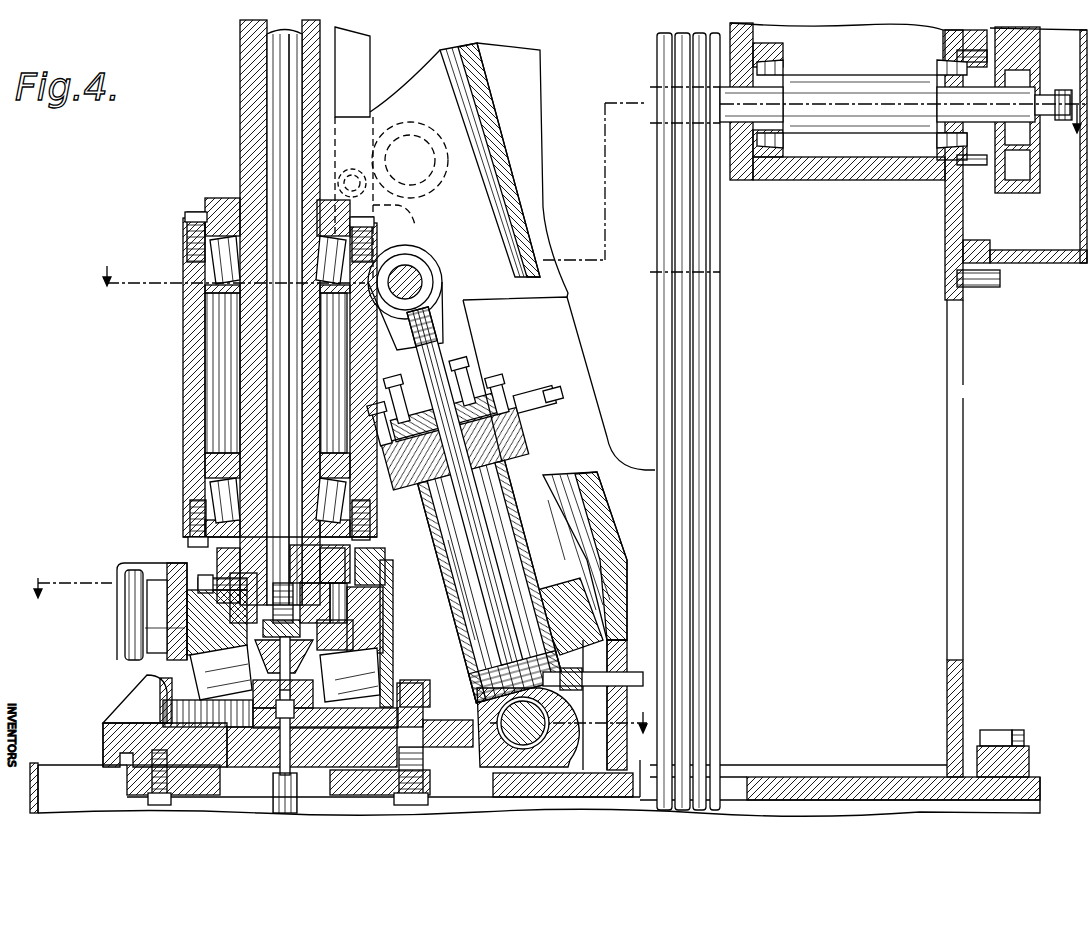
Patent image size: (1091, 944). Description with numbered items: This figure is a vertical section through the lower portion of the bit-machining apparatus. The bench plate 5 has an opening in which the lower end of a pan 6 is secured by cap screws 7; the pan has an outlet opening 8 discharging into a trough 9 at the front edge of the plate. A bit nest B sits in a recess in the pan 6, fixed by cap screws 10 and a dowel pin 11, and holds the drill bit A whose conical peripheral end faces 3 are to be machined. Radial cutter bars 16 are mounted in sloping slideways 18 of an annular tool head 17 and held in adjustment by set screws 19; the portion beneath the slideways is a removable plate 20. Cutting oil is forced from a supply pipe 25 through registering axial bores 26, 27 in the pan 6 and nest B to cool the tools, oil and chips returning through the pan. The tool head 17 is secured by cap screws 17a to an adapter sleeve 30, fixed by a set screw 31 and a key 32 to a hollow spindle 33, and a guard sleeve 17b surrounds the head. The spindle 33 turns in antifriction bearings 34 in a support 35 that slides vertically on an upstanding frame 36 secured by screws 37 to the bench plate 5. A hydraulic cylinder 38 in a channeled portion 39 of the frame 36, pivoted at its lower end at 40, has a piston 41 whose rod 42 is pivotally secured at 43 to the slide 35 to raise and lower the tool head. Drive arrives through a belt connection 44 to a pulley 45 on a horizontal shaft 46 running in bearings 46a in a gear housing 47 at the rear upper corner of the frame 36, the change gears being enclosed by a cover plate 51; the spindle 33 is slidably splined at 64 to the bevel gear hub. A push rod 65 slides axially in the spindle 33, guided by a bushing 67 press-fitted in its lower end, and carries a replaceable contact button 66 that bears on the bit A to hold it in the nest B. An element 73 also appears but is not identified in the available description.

The peripheral end faces 3 is at (301, 661).
The bench plate 5 is at (125, 778).
The pan 6 is at (412, 708).
The cap screws 7 is at (127, 797).
The outlet opening 8 is at (108, 720).
The trough 9 is at (50, 785).
The cap screws 10 is at (344, 667).
The dowel pin 11 is at (360, 740).
The cutter bars 16 is at (200, 660).
The annular tool head 17 is at (182, 642).
The cap screws 17a is at (462, 592).
The cylindrical guard sleeve 17b is at (145, 628).
The slideway 18 is at (150, 672).
The set screws 19 is at (392, 690).
The plate 20 is at (213, 715).
The supply pipe 25 is at (298, 806).
The axial bore 26 is at (280, 770).
The axial bore 27 is at (292, 712).
The adapter sleeve 30 is at (185, 608).
The set screw 31 is at (190, 588).
The key 32 is at (400, 572).
The spindle 33 is at (246, 424).
The antifriction bearings 34 is at (208, 268).
The support 35 is at (185, 392).
The frame 36 is at (573, 333).
The screws 37 is at (418, 700).
The hydraulic cylinder 38 is at (572, 548).
The channeled portion 39 is at (532, 152).
The pivot 40 is at (548, 742).
The piston 41 is at (540, 612).
The piston rod 42 is at (488, 492).
The pivot connection 43 is at (418, 268).
The belt connection 44 is at (686, 368).
The pulley 45 is at (722, 272).
The horizontal shaft 46 is at (865, 133).
The bearings 46a is at (770, 148).
The gear housing 47 is at (880, 180).
The cover plate 51 is at (1035, 264).
The spline 64 is at (345, 85).
The push rod 65 is at (276, 86).
The contact button 66 is at (372, 620).
The bushing 67 is at (262, 555).
The column 73 is at (352, 62).
The drill bit A is at (378, 642).
The bit nest B is at (326, 676).